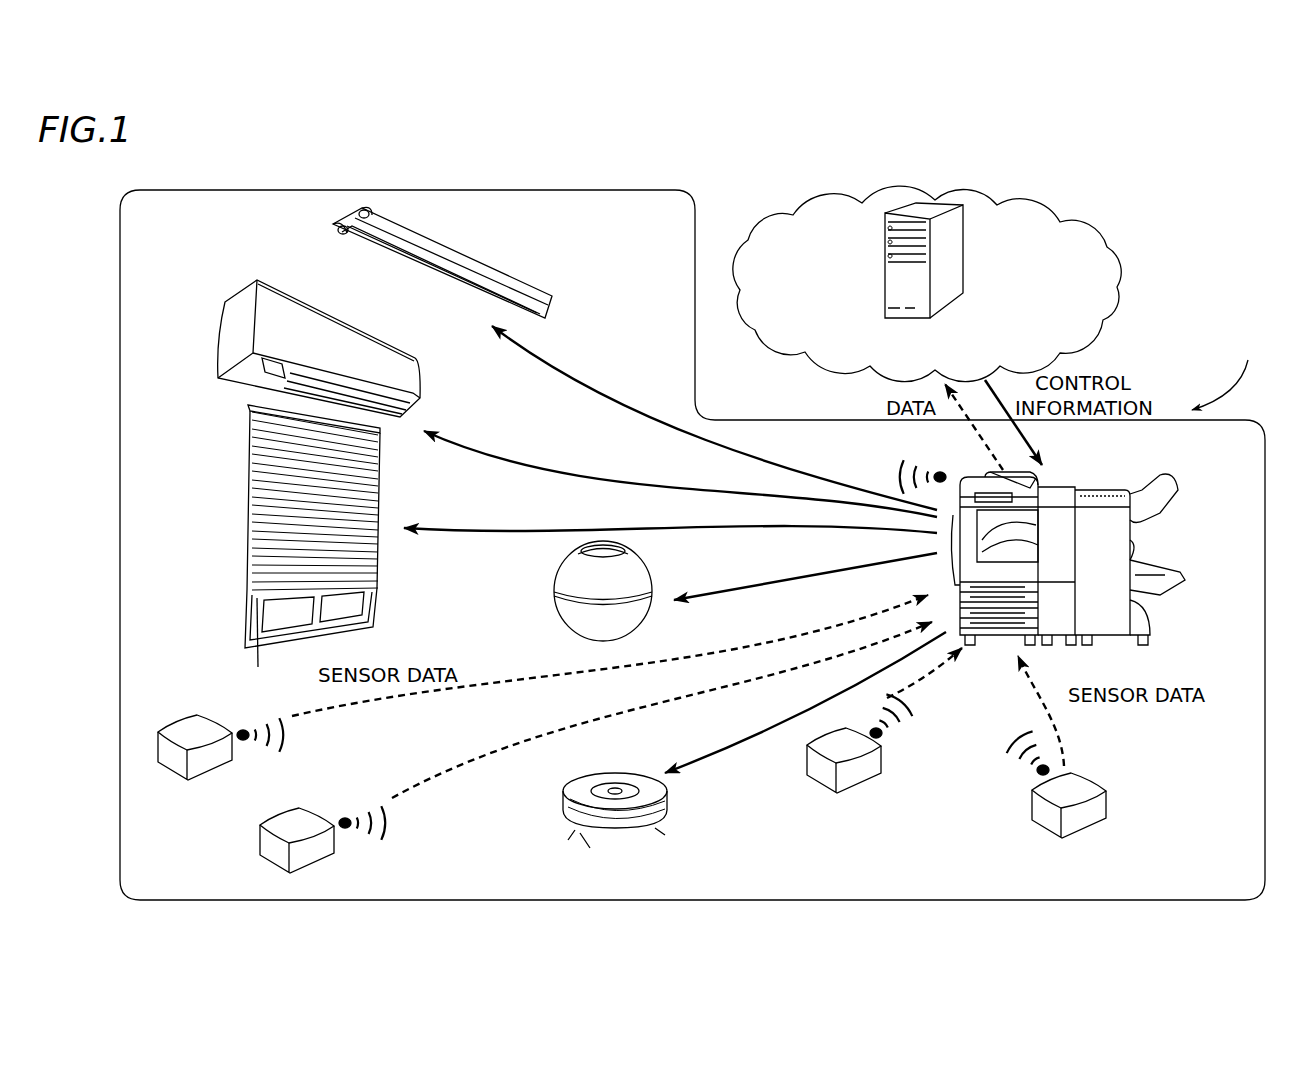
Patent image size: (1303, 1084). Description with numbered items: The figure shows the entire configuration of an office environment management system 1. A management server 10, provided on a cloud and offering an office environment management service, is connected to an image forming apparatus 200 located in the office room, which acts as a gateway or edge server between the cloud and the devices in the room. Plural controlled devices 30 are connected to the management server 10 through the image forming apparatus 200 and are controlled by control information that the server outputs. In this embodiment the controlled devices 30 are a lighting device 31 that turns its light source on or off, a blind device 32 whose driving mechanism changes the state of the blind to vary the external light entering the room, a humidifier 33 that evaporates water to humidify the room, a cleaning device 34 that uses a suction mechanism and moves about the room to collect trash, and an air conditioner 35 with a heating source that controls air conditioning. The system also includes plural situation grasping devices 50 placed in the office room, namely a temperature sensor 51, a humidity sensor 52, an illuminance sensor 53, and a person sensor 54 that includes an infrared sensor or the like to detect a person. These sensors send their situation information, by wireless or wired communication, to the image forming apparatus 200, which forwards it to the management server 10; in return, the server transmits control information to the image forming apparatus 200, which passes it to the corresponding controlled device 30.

The office environment management system 1 is at (1200, 262).
The management server 10 is at (885, 227).
The image forming apparatus 200 is at (1170, 492).
The controlled devices 30 is at (463, 540).
The lighting device 31 is at (332, 232).
The blind device 32 is at (232, 575).
The humidifier 33 is at (548, 612).
The cleaning device 34 is at (678, 826).
The air conditioner 35 is at (230, 396).
The situation grasping devices 50 is at (680, 788).
The temperature sensor 51 is at (1108, 778).
The humidity sensor 52 is at (870, 795).
The illuminance sensor 53 is at (190, 788).
The person sensor 54 is at (350, 860).